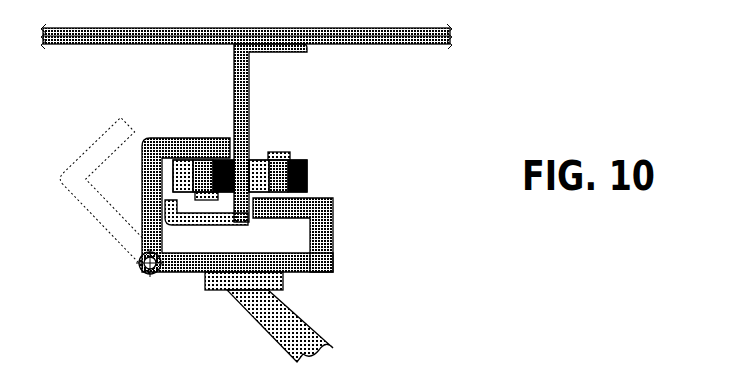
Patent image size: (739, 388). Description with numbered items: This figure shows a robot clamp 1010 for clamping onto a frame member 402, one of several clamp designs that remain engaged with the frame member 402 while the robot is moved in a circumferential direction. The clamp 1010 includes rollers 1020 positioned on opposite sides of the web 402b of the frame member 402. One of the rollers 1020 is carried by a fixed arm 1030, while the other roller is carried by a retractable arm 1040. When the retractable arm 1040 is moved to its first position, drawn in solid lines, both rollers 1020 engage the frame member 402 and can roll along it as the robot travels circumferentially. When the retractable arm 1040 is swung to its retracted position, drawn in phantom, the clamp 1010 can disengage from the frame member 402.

The frame member 402 is at (228, 86).
The web 402b is at (249, 88).
The clamp 1010 is at (259, 204).
The rollers 1020 is at (307, 163).
The fixed arm 1030 is at (322, 271).
The retractable arm 1040 is at (161, 139).